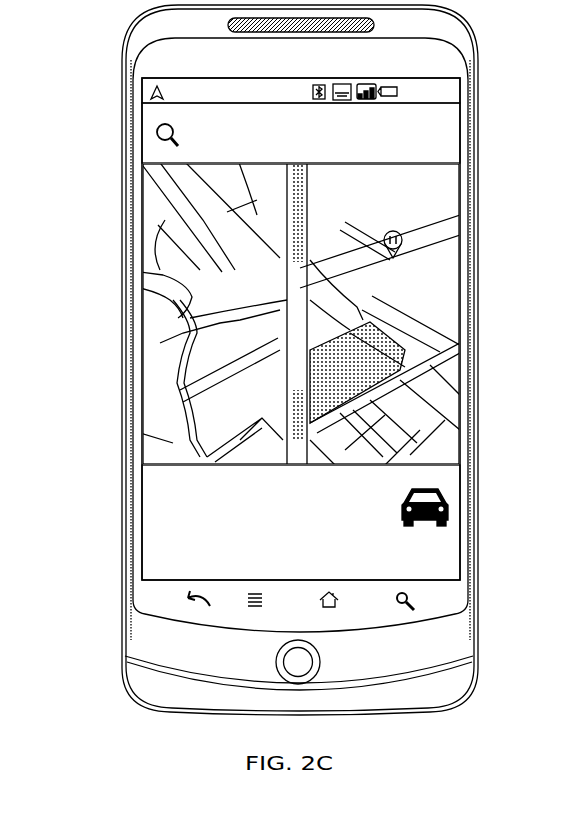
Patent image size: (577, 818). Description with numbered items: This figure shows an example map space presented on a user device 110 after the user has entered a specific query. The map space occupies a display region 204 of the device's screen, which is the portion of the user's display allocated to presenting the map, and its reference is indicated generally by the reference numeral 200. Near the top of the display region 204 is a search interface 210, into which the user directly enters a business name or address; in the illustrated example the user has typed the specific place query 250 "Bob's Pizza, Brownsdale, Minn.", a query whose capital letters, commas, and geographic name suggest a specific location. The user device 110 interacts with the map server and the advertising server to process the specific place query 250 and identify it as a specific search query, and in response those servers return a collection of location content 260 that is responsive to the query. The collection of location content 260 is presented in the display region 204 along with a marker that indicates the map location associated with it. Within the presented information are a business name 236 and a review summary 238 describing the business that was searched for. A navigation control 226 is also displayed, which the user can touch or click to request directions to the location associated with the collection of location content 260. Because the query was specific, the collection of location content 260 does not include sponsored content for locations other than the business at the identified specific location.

The user interface display 200 is at (103, 100).
The user device 110 is at (124, 289).
The display region 204 is at (140, 203).
The search interface 210 is at (460, 115).
The specific place query 250 is at (446, 138).
The collection of location content 260 is at (143, 466).
The business name 236 is at (147, 484).
The review summary 238 is at (149, 521).
The navigation control 226 is at (446, 493).